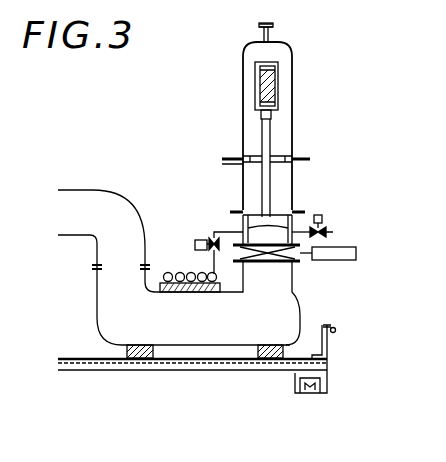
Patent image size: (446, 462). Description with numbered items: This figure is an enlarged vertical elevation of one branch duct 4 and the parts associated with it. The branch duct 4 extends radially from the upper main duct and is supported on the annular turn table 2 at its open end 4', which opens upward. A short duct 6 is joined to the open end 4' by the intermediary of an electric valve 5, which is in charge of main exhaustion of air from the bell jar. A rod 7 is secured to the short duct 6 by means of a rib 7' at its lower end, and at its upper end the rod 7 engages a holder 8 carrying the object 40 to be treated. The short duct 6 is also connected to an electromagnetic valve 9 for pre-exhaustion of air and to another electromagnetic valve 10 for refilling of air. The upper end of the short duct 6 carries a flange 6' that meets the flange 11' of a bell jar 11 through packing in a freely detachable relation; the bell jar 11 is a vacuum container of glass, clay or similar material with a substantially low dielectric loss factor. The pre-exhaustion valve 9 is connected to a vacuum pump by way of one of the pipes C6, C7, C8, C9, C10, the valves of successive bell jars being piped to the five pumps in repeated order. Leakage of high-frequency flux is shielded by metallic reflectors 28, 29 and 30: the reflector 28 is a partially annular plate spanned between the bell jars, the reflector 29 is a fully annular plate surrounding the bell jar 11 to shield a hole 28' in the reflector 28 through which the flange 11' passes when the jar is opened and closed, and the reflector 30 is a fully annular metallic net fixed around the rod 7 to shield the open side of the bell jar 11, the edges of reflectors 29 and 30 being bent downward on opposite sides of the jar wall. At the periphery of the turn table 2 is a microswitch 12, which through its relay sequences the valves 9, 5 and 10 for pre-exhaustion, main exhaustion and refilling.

The turn table 2 is at (329, 369).
The branch duct 4 is at (174, 245).
The open end 4' is at (253, 303).
The electric valve 5 is at (303, 262).
The short duct 6 is at (334, 216).
The flange 6' is at (339, 204).
The rod 7 is at (224, 159).
The rib 7' is at (242, 208).
The holder 8 is at (256, 78).
The electromagnetic valve 9 is at (195, 243).
The electromagnetic valve 10 is at (330, 231).
The bell jar 11 is at (302, 116).
The flange 11' is at (305, 200).
The microswitch 12 is at (334, 337).
The metallic reflector 28 is at (204, 146).
The hole 28' is at (204, 174).
The metallic reflector 29 is at (306, 158).
The metallic reflector 30 is at (279, 154).
The object 40 is at (272, 80).
The pipe C6 is at (213, 292).
The pipe C7 is at (202, 292).
The pipe C8 is at (190, 292).
The pipe C9 is at (176, 292).
The pipe C10 is at (162, 292).